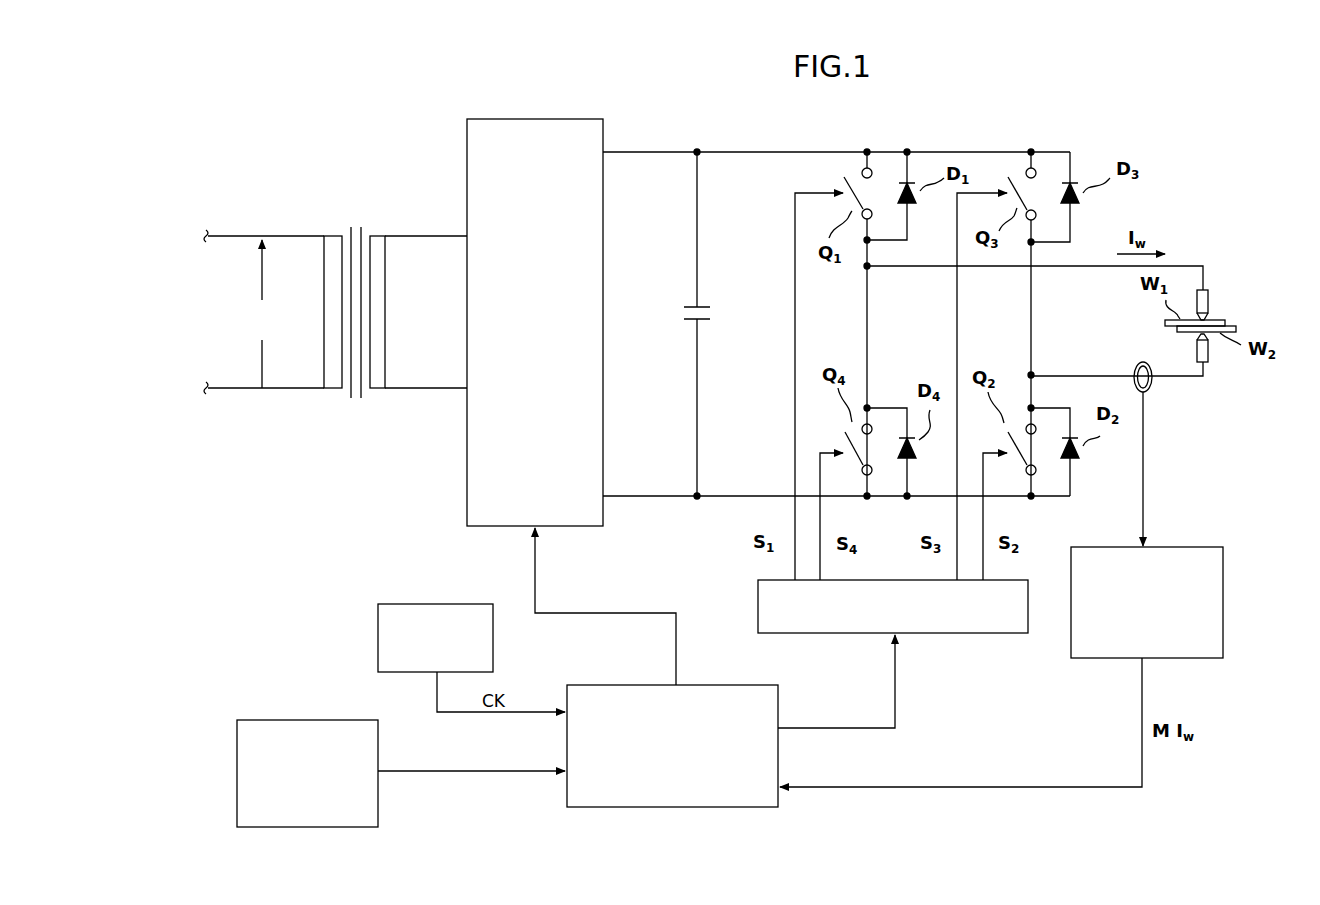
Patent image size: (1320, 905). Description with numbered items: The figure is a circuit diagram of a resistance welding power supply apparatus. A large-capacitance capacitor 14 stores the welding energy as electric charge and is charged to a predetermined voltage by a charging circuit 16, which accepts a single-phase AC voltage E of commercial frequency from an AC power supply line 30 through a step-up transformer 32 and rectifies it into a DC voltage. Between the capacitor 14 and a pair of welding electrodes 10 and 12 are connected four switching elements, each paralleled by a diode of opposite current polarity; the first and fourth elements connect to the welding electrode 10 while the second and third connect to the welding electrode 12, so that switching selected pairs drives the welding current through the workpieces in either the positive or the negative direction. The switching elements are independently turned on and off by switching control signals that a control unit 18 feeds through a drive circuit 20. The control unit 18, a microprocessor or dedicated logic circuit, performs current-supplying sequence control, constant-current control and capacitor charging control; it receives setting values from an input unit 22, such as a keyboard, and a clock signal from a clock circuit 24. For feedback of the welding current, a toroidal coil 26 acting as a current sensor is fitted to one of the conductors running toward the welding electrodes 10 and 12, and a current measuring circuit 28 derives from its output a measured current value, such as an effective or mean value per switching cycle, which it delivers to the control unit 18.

The welding electrode 10 is at (1210, 306).
The welding electrode 12 is at (1212, 352).
The capacitor 14 is at (712, 313).
The charging circuit 16 is at (566, 119).
The control unit 18 is at (745, 685).
The drive circuit 20 is at (960, 636).
The input unit 22 is at (270, 720).
The clock circuit 24 is at (396, 604).
The toroidal coil 26 is at (1155, 389).
The current measuring circuit 28 is at (1225, 568).
The AC power supply line 30 is at (306, 235).
The step-up transformer 32 is at (355, 216).